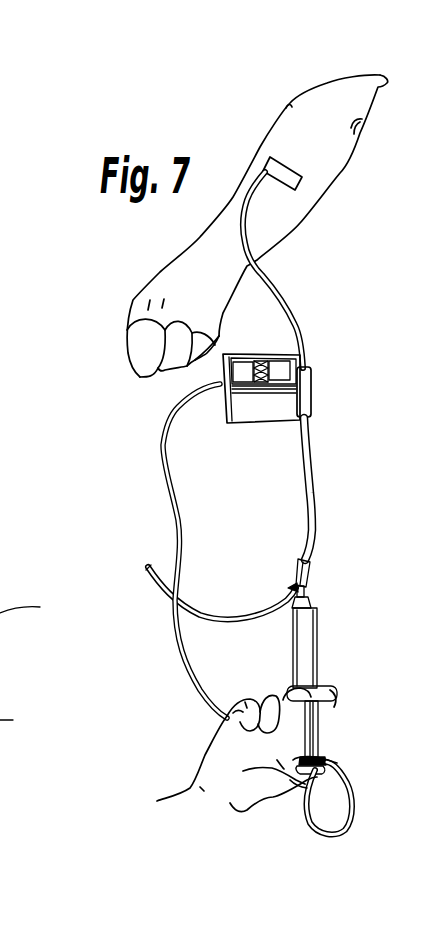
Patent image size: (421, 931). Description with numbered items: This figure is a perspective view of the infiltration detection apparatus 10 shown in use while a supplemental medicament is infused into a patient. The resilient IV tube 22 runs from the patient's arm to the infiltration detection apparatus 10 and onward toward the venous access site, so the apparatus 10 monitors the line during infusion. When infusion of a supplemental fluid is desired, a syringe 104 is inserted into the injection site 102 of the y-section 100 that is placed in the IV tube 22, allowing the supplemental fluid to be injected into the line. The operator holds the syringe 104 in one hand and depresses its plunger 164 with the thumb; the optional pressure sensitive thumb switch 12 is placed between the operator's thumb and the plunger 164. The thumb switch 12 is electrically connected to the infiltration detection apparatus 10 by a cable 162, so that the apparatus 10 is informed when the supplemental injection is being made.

The infiltration detection apparatus 10 is at (320, 383).
The pressure sensitive thumb switch 12 is at (330, 744).
The IV tube 22 is at (282, 280).
The y-section 100 is at (302, 558).
The injection site 102 is at (305, 585).
The syringe 104 is at (317, 623).
The cable 162 is at (166, 450).
The plunger 164 is at (320, 727).